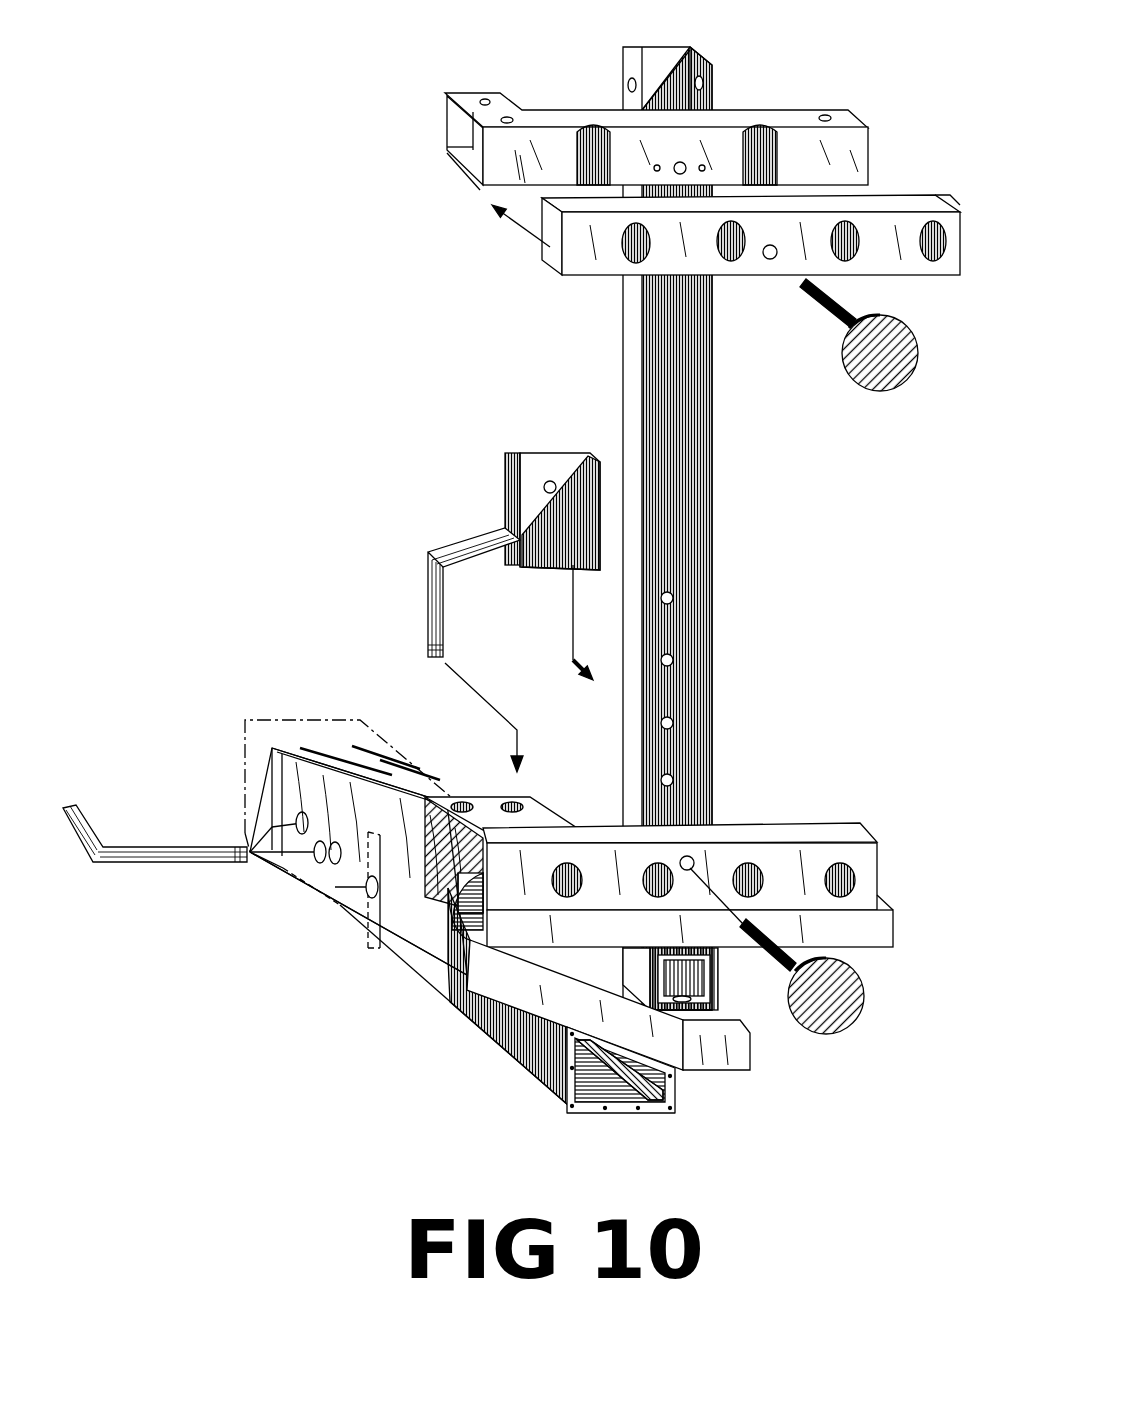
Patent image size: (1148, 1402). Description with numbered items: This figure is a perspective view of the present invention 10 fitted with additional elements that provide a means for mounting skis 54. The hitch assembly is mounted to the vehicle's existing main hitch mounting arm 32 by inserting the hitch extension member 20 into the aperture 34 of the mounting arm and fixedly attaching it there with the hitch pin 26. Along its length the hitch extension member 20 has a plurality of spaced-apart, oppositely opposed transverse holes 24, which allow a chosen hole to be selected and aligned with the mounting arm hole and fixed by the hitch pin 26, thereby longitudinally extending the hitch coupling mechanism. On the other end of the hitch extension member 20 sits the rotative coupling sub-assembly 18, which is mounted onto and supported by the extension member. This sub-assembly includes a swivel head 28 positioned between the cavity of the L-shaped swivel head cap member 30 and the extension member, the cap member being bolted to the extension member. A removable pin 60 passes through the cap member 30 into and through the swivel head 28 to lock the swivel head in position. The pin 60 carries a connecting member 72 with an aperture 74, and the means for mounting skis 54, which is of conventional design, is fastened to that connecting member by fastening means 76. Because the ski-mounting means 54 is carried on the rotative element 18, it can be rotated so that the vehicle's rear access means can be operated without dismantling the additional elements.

The present invention 10 is at (235, 1164).
The rotative coupling sub-assembly 18 is at (497, 980).
The hitch extension member 20 is at (403, 930).
The transverse holes 24 is at (271, 908).
The hitch pin 26 is at (128, 846).
The swivel head 28 is at (737, 1067).
The L-shaped swivel head cap member 30 is at (532, 797).
The main hitch mounting arm 32 is at (323, 913).
The aperture 34 is at (367, 920).
The means for mounting skis 54 is at (711, 528).
The removable pin 60 is at (428, 597).
The connecting member 72 is at (519, 503).
The aperture 74 is at (549, 482).
The fastening means 76 is at (856, 1003).